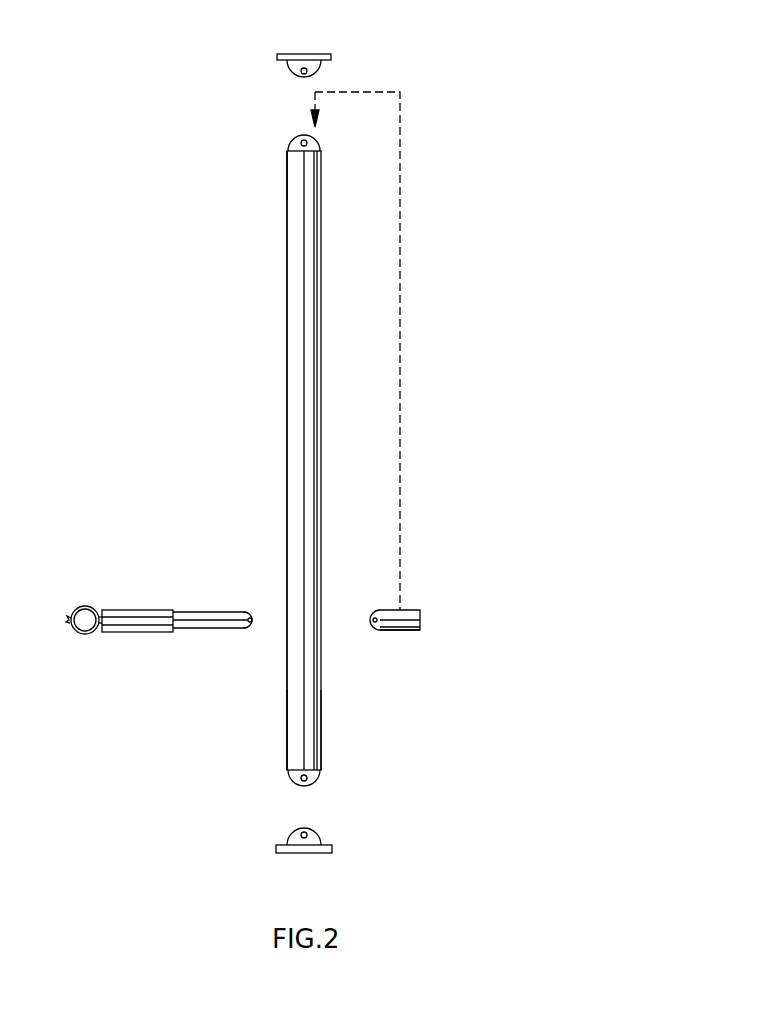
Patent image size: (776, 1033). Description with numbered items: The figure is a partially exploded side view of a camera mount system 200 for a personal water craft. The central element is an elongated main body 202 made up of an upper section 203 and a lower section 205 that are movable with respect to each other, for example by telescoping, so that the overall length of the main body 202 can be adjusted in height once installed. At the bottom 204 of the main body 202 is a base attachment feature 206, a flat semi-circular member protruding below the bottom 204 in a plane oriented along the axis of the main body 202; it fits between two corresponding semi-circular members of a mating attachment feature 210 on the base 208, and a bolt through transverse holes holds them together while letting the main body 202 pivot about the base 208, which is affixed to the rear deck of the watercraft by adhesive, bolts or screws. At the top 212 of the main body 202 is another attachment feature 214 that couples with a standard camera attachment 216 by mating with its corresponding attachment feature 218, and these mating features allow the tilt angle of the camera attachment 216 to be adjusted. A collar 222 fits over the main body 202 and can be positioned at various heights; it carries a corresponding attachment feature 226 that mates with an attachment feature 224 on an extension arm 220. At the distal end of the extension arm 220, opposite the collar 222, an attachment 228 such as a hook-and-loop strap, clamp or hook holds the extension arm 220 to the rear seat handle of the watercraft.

The camera mount system 200 is at (751, 60).
The main body 202 is at (278, 298).
The upper section 203 is at (287, 383).
The bottom 204 is at (322, 740).
The lower section 205 is at (287, 700).
The base attachment feature 206 is at (320, 778).
The base 208 is at (323, 845).
The mating attachment feature 210 is at (290, 833).
The top 212 is at (287, 188).
The attachment feature 214 is at (290, 138).
The camera attachment 216 is at (308, 54).
The corresponding attachment feature 218 is at (329, 58).
The extension arm 220 is at (220, 610).
The collar 222 is at (420, 618).
The attachment feature 224 is at (250, 615).
The corresponding attachment feature 226 is at (375, 625).
The attachment 228 is at (153, 608).